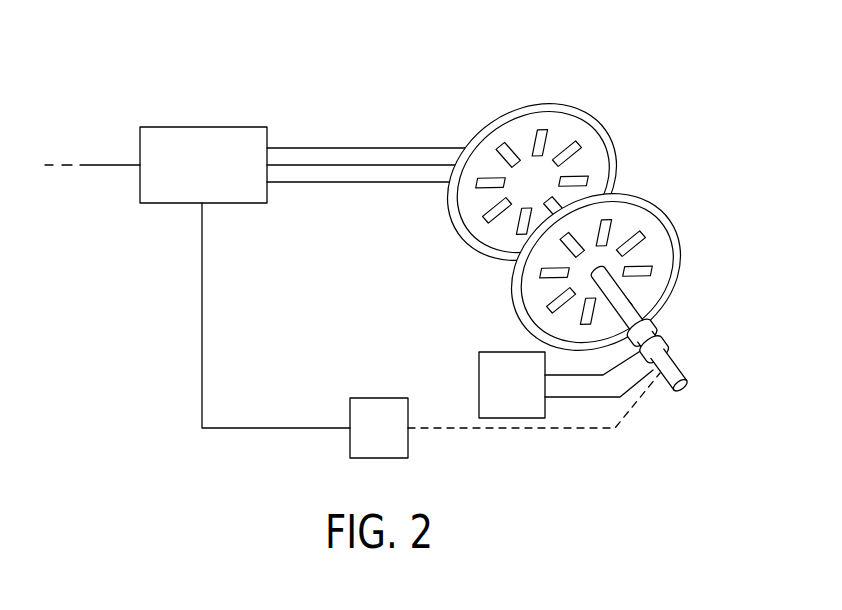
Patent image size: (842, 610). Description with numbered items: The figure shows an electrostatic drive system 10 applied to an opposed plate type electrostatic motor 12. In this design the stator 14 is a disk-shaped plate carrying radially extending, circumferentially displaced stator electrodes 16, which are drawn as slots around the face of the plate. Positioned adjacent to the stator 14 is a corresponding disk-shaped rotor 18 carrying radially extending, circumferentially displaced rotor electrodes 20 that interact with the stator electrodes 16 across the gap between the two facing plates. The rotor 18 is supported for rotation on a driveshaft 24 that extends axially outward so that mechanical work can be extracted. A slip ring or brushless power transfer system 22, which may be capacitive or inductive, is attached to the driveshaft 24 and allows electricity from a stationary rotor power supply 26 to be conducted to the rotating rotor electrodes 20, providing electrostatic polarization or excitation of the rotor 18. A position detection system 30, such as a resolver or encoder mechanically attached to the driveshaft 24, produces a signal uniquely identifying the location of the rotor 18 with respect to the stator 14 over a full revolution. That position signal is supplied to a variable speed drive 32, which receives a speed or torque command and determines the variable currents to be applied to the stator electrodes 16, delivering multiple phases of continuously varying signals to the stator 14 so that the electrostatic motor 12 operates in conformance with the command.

The electrostatic drive system 10 is at (180, 88).
The electrostatic motor 12 is at (602, 83).
The stator 14 is at (490, 128).
The stator electrodes 16 is at (557, 145).
The rotor 18 is at (521, 314).
The rotor electrodes 20 is at (648, 242).
The power transfer system 22 is at (685, 333).
The driveshaft 24 is at (684, 370).
The rotor power supply 26 is at (499, 397).
The position detection system 30 is at (366, 438).
The variable speed drive 32 is at (190, 178).